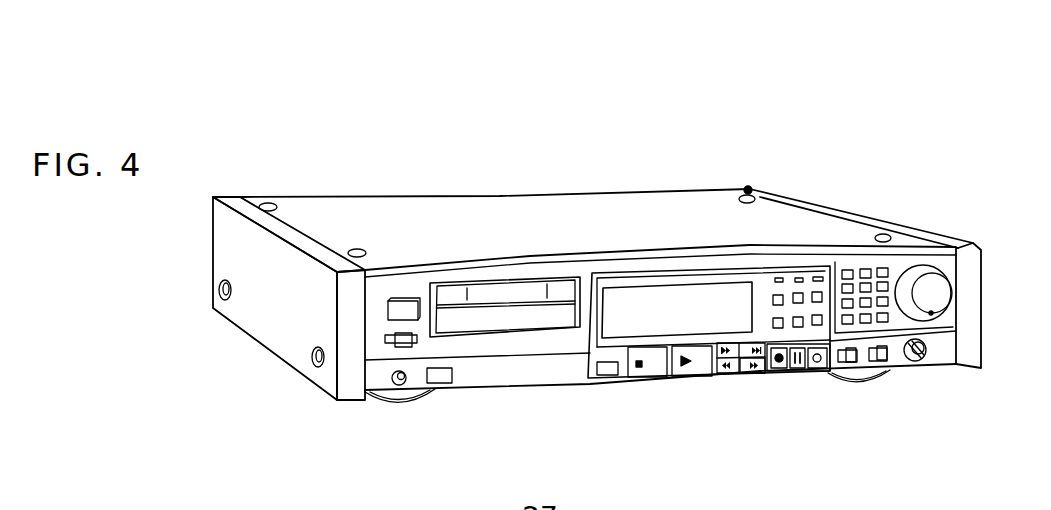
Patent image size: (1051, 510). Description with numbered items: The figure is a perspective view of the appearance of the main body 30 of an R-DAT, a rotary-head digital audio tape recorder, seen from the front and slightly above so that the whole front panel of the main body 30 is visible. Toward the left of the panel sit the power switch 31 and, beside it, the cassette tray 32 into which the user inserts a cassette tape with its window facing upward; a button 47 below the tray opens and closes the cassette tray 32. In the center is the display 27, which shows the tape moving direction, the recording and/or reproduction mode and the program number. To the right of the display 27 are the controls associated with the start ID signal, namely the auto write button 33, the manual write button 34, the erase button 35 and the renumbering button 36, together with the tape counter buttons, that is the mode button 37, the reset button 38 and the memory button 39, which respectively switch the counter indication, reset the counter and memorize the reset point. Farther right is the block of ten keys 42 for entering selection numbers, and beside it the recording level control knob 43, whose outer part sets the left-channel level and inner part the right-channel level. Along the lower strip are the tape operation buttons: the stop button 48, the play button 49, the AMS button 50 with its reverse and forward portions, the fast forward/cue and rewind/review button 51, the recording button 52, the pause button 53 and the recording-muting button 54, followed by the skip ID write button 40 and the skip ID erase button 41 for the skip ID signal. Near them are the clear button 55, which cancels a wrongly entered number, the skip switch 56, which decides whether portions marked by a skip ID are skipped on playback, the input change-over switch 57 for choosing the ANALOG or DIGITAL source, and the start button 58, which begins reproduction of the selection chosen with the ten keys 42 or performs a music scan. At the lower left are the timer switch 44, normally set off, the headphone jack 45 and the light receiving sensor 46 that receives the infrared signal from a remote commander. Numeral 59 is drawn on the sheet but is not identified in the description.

The main body 30 is at (315, 189).
The display 27 is at (623, 300).
The power switch 31 is at (400, 306).
The cassette tray 32 is at (497, 293).
The auto write button 33 is at (776, 323).
The manual write button 34 is at (779, 278).
The erase button 35 is at (819, 277).
The renumbering button 36 is at (776, 300).
The mode button 37 is at (797, 298).
The reset button 38 is at (800, 278).
The memory button 39 is at (819, 295).
The skip ID write button 40 is at (812, 370).
The skip ID erase button 41 is at (820, 326).
The ten keys 42 is at (873, 262).
The recording level control knob 43 is at (942, 300).
The timer switch 44 is at (386, 342).
The headphone jack 45 is at (399, 385).
The light receiving sensor 46 is at (442, 383).
The button 47 is at (610, 375).
The stop button 48 is at (652, 375).
The play button 49 is at (690, 375).
The AMS button 50 is at (733, 367).
The fast forward/cue and rewind/review button 51 is at (742, 371).
The recording button 52 is at (777, 370).
The pause button 53 is at (800, 370).
The recording-muting button 54 is at (800, 328).
The clear button 55 is at (852, 325).
The skip switch 56 is at (851, 363).
The input change-over switch 57 is at (888, 361).
The start button 58 is at (930, 356).
The key 59 is at (888, 323).